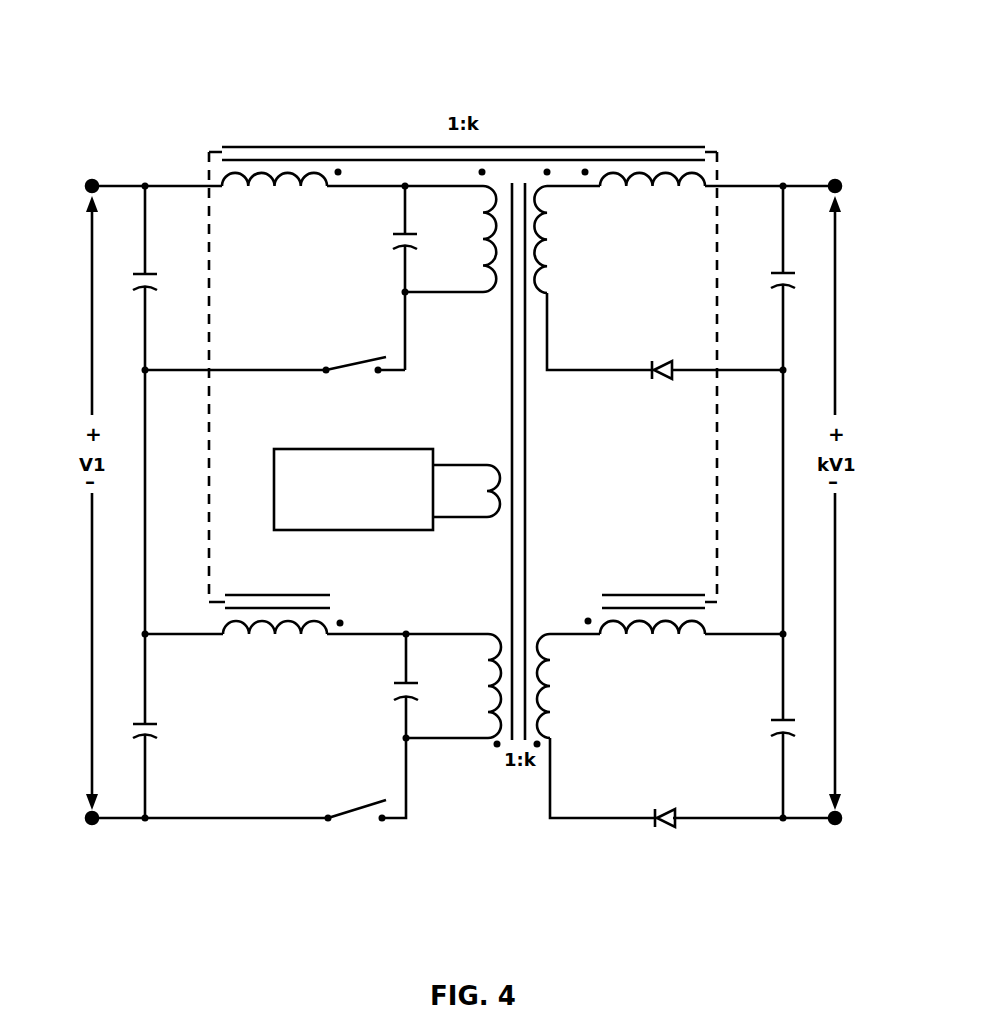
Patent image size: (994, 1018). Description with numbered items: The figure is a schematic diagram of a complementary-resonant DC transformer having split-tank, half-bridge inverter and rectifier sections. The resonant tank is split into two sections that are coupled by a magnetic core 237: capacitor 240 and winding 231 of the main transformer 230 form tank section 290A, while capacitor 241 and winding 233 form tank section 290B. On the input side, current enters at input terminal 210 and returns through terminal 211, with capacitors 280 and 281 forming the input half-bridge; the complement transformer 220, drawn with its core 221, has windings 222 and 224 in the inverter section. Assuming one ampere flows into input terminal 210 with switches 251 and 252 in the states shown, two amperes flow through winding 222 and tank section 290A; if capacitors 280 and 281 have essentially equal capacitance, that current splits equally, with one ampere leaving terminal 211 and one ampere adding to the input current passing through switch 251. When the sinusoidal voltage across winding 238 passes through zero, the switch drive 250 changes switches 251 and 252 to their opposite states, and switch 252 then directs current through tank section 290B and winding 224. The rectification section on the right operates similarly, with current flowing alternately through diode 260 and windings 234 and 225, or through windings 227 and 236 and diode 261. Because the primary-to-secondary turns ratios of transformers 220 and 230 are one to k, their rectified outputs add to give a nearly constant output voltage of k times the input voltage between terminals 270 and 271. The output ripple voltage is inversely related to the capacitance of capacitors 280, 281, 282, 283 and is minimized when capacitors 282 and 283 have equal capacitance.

The complement transformer 220 is at (462, 102).
The transformer core 221 is at (338, 147).
The winding 222 is at (222, 188).
The winding 224 is at (225, 636).
The winding 225 is at (598, 188).
The winding 227 is at (602, 636).
The main transformer 230 is at (516, 774).
The winding 231 is at (487, 294).
The winding 233 is at (488, 740).
The winding 234 is at (548, 293).
The winding 236 is at (551, 738).
The magnetic core 237 is at (527, 550).
The winding 238 is at (485, 465).
The capacitor 240 is at (403, 258).
The capacitor 241 is at (404, 709).
The switch drive 250 is at (330, 449).
The switch 251 is at (353, 363).
The switch 252 is at (355, 806).
The diode 260 is at (633, 368).
The diode 261 is at (642, 816).
The terminal 270 is at (823, 184).
The terminal 271 is at (826, 820).
The input terminal 210 is at (104, 184).
The terminal 211 is at (107, 820).
The capacitor 280 is at (148, 292).
The capacitor 281 is at (150, 742).
The capacitor 282 is at (780, 272).
The capacitor 283 is at (780, 720).
The tank section 290A is at (355, 240).
The tank section 290B is at (457, 616).